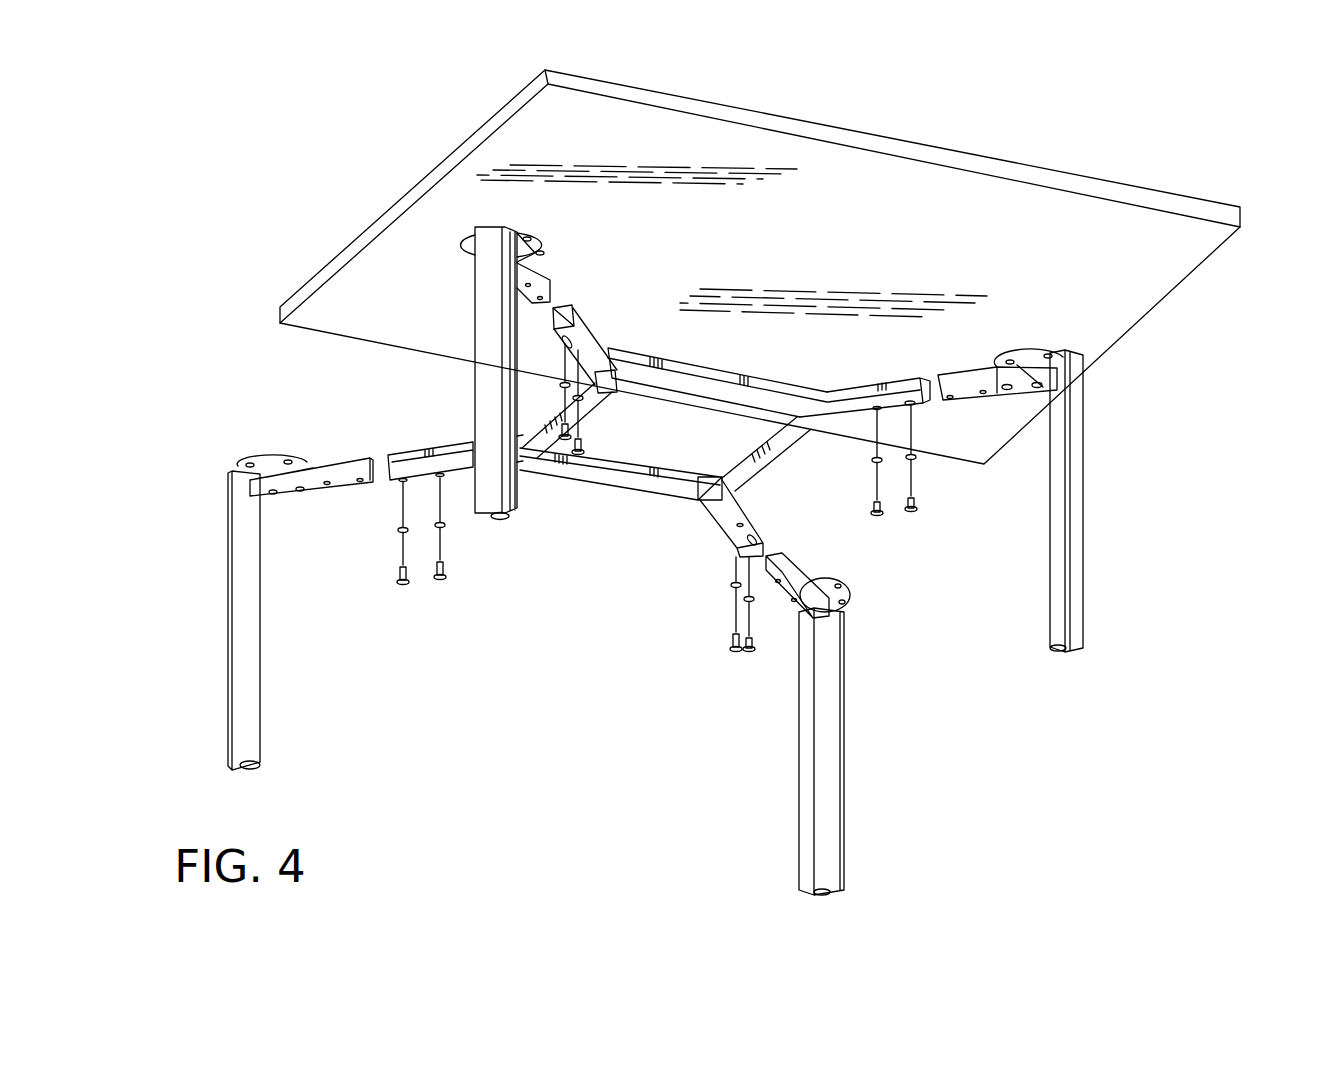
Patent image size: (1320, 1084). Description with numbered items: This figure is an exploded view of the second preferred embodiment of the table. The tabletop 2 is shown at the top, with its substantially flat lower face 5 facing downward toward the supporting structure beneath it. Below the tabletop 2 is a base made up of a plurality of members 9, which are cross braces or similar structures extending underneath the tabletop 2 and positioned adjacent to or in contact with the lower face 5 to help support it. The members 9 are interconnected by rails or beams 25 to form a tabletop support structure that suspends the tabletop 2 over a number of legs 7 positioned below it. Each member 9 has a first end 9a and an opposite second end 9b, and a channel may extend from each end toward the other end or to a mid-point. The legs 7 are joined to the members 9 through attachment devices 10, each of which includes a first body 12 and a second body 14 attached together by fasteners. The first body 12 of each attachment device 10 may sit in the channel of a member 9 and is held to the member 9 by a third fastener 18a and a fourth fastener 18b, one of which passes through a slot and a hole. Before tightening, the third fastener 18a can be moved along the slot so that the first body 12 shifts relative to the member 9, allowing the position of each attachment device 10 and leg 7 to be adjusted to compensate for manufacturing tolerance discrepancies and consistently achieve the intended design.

The tabletop 2 is at (1055, 172).
The lower face 5 is at (806, 192).
The legs 7 is at (252, 687).
The members 9 is at (593, 337).
The first end 9a is at (573, 311).
The second end 9b is at (603, 380).
The attachment device 10 is at (679, 420).
The first body 12 is at (547, 280).
The second body 14 is at (537, 235).
The third fastener 18a is at (398, 580).
The fourth fastener 18b is at (443, 577).
The rails or beams 25 is at (693, 370).